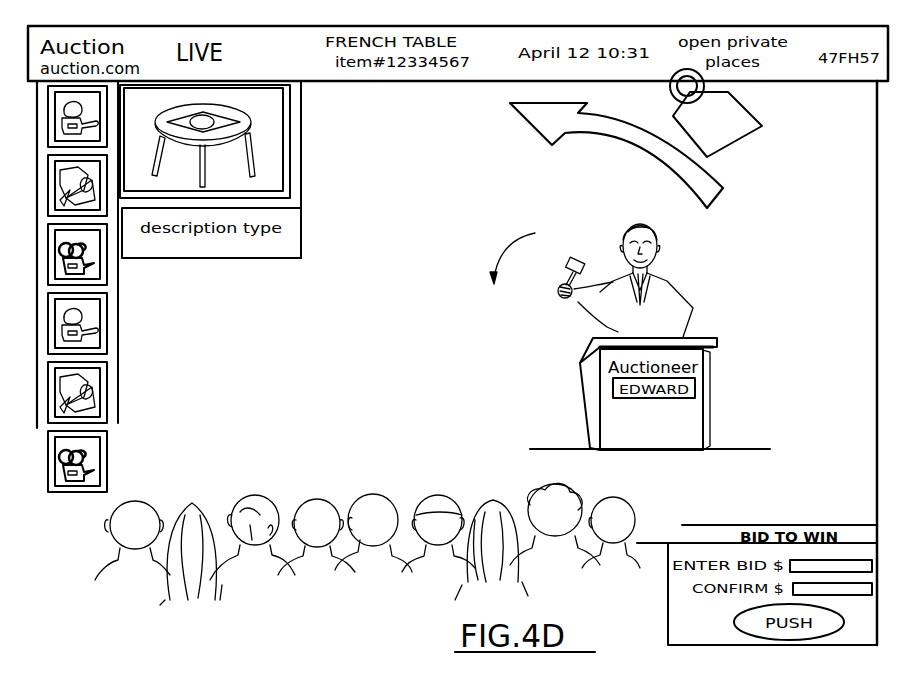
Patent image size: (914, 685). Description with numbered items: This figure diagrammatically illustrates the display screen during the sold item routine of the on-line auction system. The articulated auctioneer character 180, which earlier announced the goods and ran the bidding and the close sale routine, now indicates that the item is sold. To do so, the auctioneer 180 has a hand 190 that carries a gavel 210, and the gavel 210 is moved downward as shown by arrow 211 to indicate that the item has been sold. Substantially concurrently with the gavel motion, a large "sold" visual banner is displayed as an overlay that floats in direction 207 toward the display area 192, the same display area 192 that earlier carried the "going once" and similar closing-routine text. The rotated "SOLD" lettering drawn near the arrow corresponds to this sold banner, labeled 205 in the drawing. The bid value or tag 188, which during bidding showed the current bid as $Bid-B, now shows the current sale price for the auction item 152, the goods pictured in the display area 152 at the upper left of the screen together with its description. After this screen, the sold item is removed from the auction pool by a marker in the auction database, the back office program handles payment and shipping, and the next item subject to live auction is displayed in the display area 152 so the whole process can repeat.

The display area 152 is at (246, 181).
The display area 192 is at (377, 103).
The direction 207 is at (624, 154).
The tag 188 is at (750, 110).
The sold stamp 205 is at (768, 230).
The auctioneer character figure 180 is at (697, 307).
The hand 190 is at (556, 292).
The gavel 210 is at (571, 258).
The arrow 211 is at (501, 258).